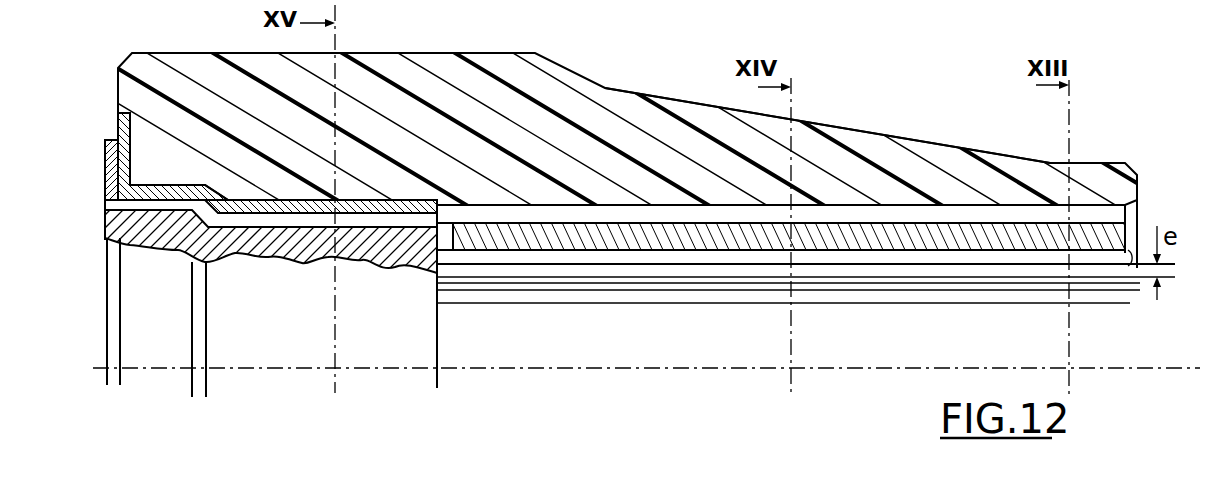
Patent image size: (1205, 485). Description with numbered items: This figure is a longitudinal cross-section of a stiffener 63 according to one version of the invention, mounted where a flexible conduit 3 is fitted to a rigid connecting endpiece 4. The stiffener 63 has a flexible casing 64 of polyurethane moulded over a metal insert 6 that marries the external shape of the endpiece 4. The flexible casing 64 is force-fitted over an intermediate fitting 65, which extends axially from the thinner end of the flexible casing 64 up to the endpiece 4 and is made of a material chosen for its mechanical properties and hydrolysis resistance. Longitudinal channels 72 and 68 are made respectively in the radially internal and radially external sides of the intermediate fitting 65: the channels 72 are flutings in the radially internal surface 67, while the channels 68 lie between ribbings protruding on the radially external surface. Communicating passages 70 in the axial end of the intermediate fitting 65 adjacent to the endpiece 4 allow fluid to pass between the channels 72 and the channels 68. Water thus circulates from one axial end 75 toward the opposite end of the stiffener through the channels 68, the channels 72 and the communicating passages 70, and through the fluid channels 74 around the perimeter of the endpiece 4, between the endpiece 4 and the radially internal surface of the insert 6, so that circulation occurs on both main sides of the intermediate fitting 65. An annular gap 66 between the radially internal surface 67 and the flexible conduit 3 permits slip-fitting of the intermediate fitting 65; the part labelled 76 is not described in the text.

The flexible conduit 3 is at (708, 280).
The rigid connecting endpiece 4 is at (143, 302).
The metal insert 6 is at (182, 197).
The stiffener 63 is at (446, 80).
The flexible casing 64 is at (825, 150).
The intermediate fitting 65 is at (907, 253).
The annular gap 66 is at (833, 272).
The radially internal surface 67 is at (988, 250).
The longitudinal channels 68 is at (900, 214).
The communicating passages 70 is at (447, 242).
The longitudinal channels 72 is at (867, 257).
The fluid channels 74 is at (297, 215).
The axial end 75 is at (1130, 257).
The washer 76 is at (104, 203).